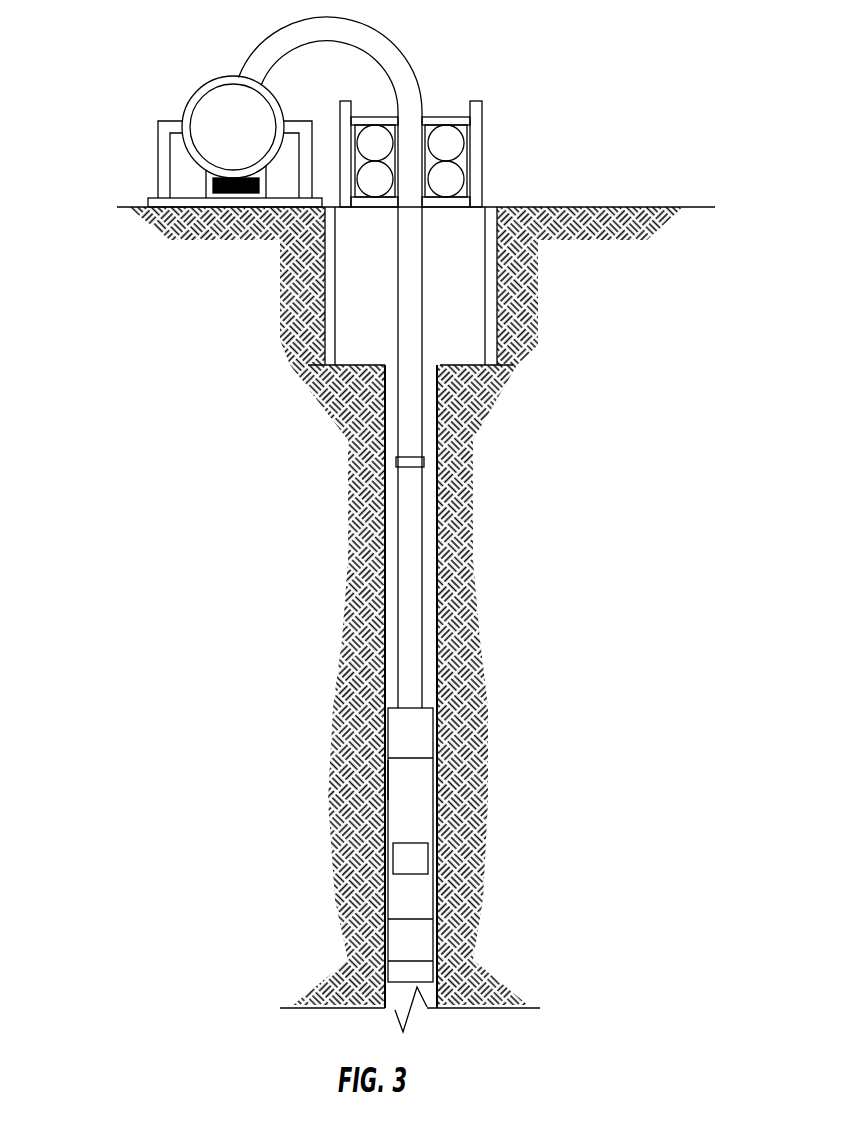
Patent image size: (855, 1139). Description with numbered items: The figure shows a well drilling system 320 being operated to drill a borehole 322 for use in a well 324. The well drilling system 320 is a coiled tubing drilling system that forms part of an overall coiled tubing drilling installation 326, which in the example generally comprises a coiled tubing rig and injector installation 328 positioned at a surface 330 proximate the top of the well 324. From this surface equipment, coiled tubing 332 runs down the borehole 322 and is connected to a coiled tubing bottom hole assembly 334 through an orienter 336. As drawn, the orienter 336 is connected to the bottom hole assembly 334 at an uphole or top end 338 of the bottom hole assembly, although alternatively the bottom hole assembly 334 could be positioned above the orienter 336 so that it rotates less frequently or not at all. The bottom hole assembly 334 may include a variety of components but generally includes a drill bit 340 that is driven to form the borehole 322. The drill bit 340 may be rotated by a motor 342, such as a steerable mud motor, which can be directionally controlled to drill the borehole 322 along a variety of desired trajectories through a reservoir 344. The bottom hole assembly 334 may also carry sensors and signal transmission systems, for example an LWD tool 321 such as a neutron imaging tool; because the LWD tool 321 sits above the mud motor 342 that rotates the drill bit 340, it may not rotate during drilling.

The well drilling system 320 is at (428, 363).
The LWD tool 321 is at (430, 860).
The borehole 322 is at (430, 674).
The well 324 is at (497, 160).
The coiled tubing drilling installation 326 is at (198, 73).
The coiled tubing rig and injector installation 328 is at (157, 180).
The surface 330 is at (657, 206).
The coiled tubing 332 is at (413, 530).
The coiled tubing bottom hole assembly 334 is at (385, 800).
The orienter 336 is at (385, 730).
The top end 338 is at (412, 778).
The drill bit 340 is at (403, 970).
The motor 342 is at (432, 942).
The reservoir 344 is at (268, 237).